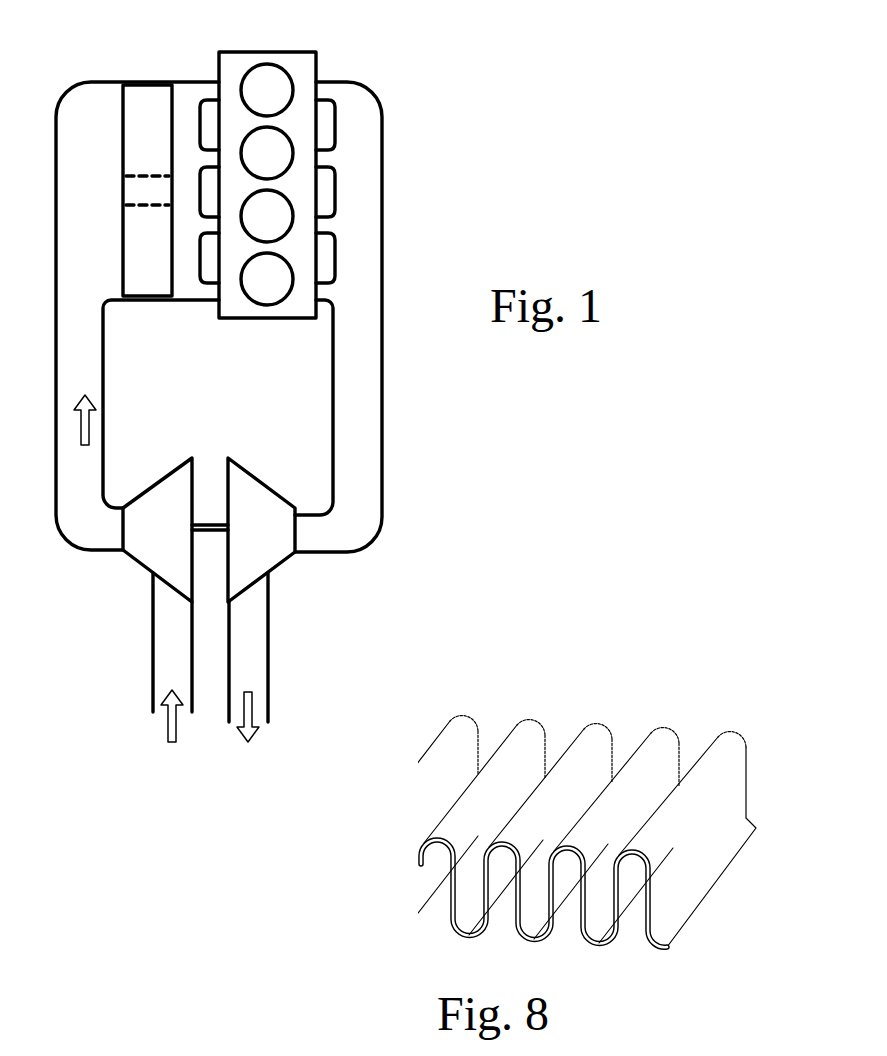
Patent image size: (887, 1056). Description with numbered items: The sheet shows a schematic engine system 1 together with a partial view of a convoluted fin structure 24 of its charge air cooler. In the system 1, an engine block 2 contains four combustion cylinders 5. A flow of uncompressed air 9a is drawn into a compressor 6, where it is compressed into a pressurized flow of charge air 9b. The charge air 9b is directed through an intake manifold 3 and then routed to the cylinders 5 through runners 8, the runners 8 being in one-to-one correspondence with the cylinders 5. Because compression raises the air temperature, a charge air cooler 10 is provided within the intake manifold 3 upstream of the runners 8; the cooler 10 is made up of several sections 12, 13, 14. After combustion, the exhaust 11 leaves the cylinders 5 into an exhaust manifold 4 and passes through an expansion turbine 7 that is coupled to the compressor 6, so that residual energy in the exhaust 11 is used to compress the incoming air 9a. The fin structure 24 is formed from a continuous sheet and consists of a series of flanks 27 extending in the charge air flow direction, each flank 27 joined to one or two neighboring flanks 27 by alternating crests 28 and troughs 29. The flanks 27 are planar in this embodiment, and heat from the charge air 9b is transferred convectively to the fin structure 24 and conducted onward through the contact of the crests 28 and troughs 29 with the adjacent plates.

In FIG. 1, the system 1 is at (445, 128).
In FIG. 1, the engine block 2 is at (243, 52).
In FIG. 1, the intake manifold 3 is at (56, 220).
In FIG. 1, the exhaust manifold 4 is at (384, 226).
In FIG. 1, the combustion cylinders 5 is at (285, 72).
In FIG. 1, the compressor 6 is at (130, 558).
In FIG. 1, the expansion turbine 7 is at (280, 562).
In FIG. 1, the runners 8 is at (205, 88).
In FIG. 1, the uncompressed air 9a is at (165, 720).
In FIG. 1, the charge air 9b is at (79, 428).
In FIG. 1, the charge air cooler 10 is at (117, 103).
In FIG. 1, the exhaust 11 is at (255, 734).
In FIG. 1, the section of charge air cooler 12 is at (147, 193).
In FIG. 1, the section of charge air cooler 13 is at (148, 255).
In FIG. 1, the section of charge air cooler 14 is at (147, 144).
In FIG. 8, the convoluted fin structure 24 is at (598, 664).
In FIG. 8, the flanks 27 is at (474, 865).
In FIG. 8, the crests 28 is at (462, 716).
In FIG. 8, the troughs 29 is at (466, 915).